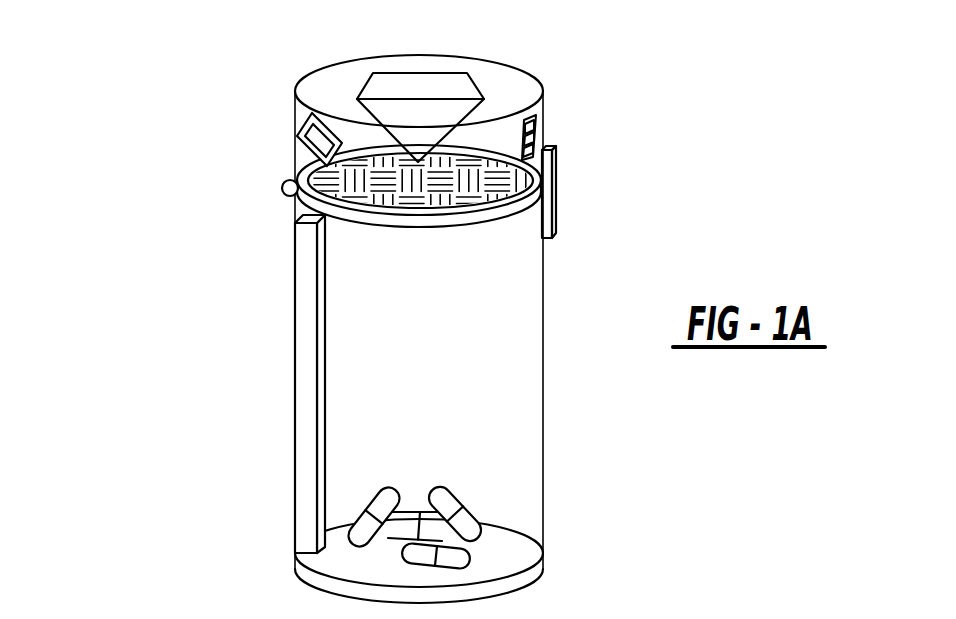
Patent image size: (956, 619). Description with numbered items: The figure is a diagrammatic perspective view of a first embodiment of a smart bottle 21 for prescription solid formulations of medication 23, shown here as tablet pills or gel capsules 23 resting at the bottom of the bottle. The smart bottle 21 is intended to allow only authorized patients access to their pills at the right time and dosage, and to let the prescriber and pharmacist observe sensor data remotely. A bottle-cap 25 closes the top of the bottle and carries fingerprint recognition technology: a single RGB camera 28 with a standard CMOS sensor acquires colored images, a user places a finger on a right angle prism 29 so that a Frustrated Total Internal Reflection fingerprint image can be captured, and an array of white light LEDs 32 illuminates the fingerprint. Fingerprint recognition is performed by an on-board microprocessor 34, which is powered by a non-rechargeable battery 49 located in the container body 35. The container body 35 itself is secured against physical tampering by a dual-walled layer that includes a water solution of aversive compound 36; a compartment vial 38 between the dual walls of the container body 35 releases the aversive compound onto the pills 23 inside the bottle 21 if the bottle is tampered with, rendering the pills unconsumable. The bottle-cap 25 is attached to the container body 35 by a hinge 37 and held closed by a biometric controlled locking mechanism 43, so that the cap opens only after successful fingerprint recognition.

The smart bottle 21 is at (142, 241).
The medication 23 is at (466, 532).
The bottle-cap 25 is at (296, 116).
The RGB camera 28 is at (313, 135).
The right angle prism 29 is at (417, 83).
The array of white light LEDs 32 is at (527, 122).
The on-board microprocessor 34 is at (440, 183).
The container body 35 is at (545, 403).
The water solution of aversive compound 36 is at (300, 425).
The hinge 37 is at (281, 191).
The compartment vial 38 is at (324, 303).
The biometric controlled locking mechanism 43 is at (546, 175).
The non-rechargeable battery 49 is at (307, 577).